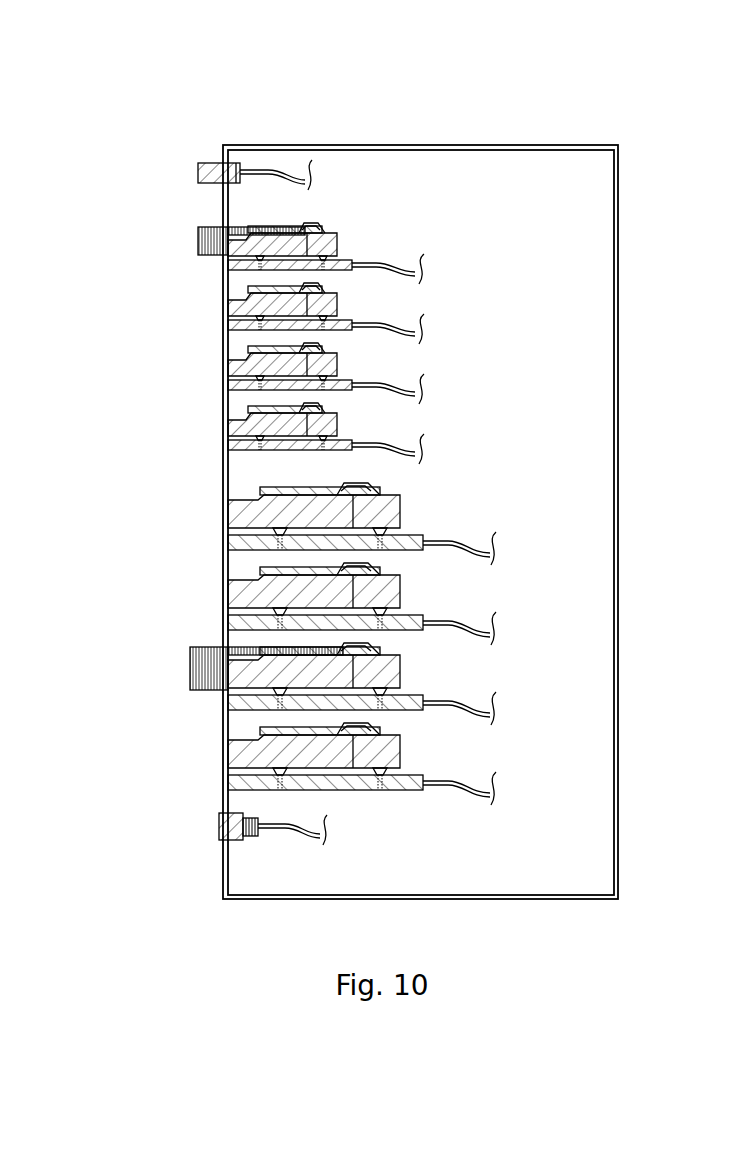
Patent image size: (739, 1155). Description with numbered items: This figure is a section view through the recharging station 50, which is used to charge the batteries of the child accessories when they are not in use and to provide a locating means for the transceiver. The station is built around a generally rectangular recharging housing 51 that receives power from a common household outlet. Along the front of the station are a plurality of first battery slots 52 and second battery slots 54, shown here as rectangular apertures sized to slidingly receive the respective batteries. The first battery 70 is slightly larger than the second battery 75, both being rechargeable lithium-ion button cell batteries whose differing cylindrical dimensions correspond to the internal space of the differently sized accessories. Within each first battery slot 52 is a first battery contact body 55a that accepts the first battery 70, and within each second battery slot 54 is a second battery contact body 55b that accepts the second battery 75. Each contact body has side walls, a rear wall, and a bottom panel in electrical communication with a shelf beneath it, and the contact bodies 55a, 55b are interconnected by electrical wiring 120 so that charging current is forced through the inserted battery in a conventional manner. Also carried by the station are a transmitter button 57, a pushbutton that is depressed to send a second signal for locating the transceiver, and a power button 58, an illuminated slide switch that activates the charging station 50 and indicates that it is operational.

The recharging station 50 is at (88, 112).
The recharging housing 51 is at (432, 145).
The first battery slot 52 is at (226, 590).
The second battery slot 54 is at (228, 425).
The first battery contact body 55a is at (383, 647).
The second battery contact body 55b is at (306, 289).
The transmitter button 57 is at (222, 830).
The power button 58 is at (204, 160).
The first battery 70 is at (200, 665).
The second battery 75 is at (210, 240).
The electrical wiring 120 is at (278, 165).